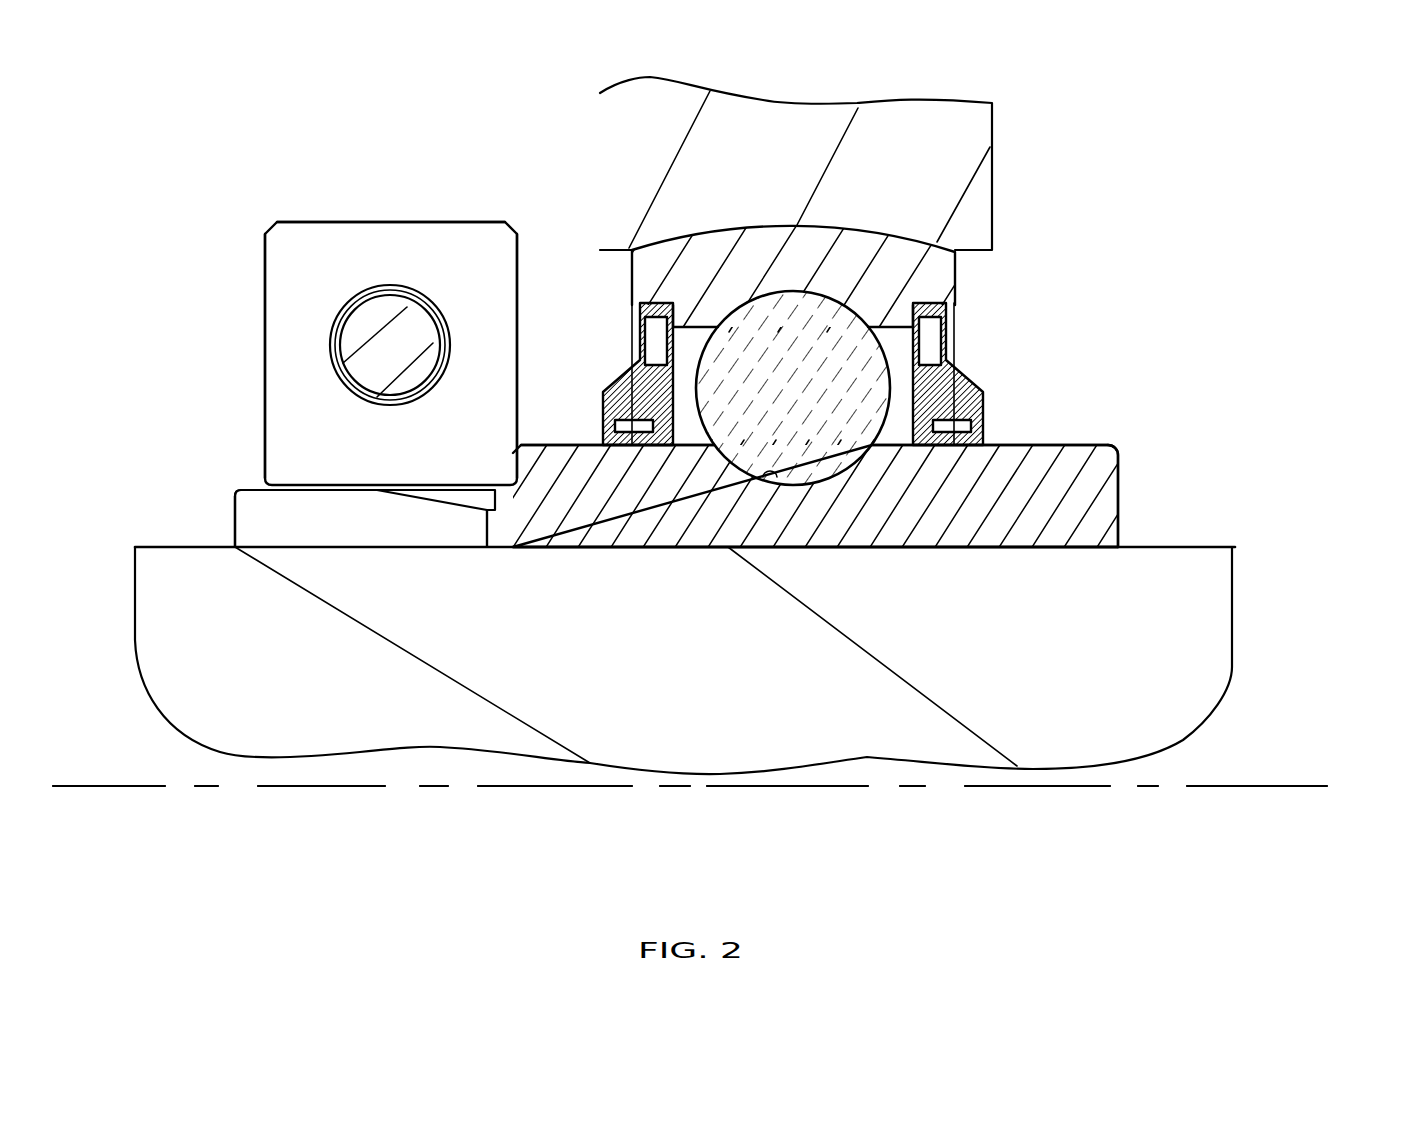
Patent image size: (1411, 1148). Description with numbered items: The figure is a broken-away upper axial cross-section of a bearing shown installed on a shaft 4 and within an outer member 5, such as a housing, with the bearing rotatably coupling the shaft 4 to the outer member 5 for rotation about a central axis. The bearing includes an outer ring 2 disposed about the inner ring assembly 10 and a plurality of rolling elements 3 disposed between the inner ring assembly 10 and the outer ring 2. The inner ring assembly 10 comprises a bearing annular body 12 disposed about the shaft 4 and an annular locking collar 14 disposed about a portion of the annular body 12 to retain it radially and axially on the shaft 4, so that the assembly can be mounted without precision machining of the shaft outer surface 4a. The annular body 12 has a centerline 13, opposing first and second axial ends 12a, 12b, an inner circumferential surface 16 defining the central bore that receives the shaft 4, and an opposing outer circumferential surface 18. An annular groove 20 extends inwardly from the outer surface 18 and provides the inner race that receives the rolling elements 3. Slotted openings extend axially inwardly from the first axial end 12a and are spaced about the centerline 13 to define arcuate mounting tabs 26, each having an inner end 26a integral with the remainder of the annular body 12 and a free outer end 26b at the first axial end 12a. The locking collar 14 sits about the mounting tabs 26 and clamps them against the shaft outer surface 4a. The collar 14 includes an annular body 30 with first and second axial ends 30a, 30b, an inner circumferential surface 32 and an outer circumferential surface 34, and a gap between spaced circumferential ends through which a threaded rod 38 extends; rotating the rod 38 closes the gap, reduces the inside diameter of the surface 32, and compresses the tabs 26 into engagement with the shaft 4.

The outer ring 2 is at (945, 285).
The rolling elements 3 is at (889, 378).
The shaft 4 is at (1205, 608).
The shaft outer surface 4a is at (1215, 547).
The outer member 5 is at (905, 115).
The inner ring assembly 10 is at (851, 352).
The annular body 12 is at (812, 499).
The first axial end 12a is at (230, 502).
The second axial end 12b is at (1124, 485).
The centerline 13 is at (1277, 787).
The annular locking collar 14 is at (375, 300).
The inner circumferential surface 16 is at (928, 549).
The outer circumferential surface 18 is at (1022, 445).
The annular groove 20 is at (762, 477).
The arcuate mounting tabs 26 is at (360, 553).
The inner end 26a is at (505, 549).
The free outer end 26b is at (236, 549).
The collar annular body 30 is at (375, 312).
The first axial end 30a is at (265, 320).
The second axial end 30b is at (518, 312).
The inner circumferential surface 32 is at (315, 492).
The outer circumferential surface 34 is at (423, 222).
The threaded rod 38 is at (343, 352).